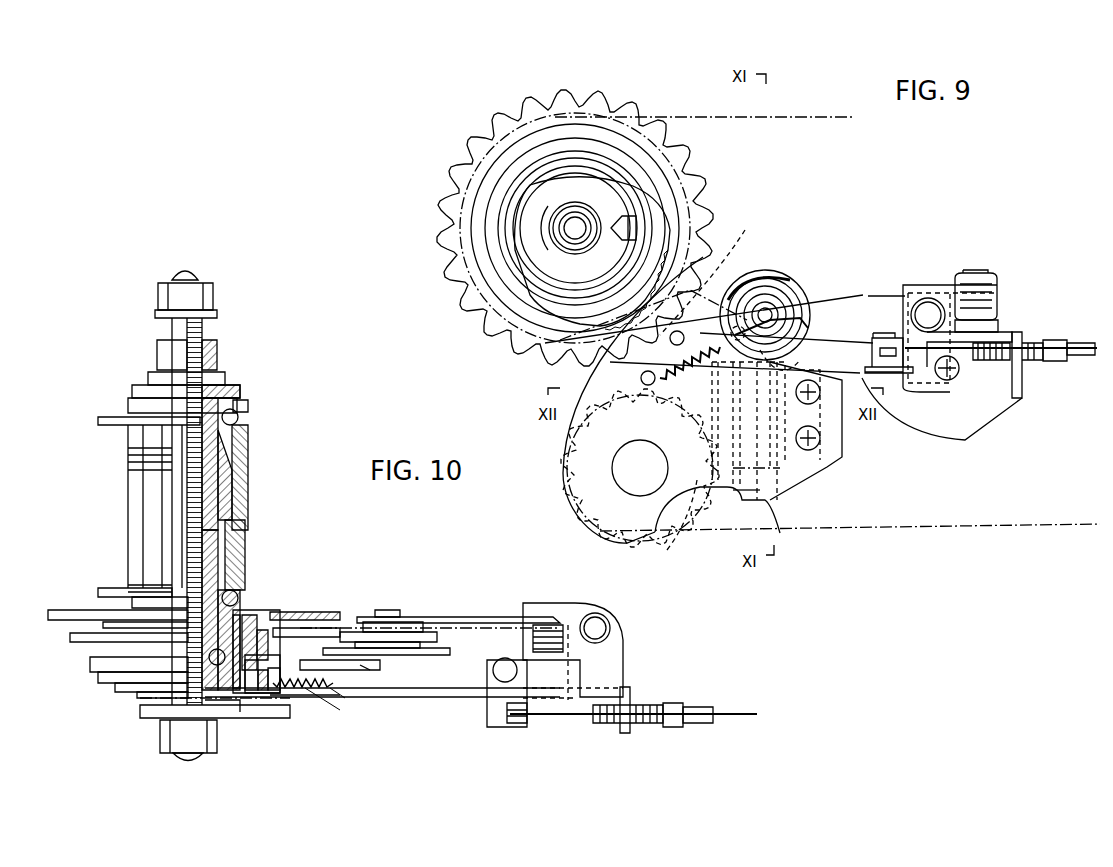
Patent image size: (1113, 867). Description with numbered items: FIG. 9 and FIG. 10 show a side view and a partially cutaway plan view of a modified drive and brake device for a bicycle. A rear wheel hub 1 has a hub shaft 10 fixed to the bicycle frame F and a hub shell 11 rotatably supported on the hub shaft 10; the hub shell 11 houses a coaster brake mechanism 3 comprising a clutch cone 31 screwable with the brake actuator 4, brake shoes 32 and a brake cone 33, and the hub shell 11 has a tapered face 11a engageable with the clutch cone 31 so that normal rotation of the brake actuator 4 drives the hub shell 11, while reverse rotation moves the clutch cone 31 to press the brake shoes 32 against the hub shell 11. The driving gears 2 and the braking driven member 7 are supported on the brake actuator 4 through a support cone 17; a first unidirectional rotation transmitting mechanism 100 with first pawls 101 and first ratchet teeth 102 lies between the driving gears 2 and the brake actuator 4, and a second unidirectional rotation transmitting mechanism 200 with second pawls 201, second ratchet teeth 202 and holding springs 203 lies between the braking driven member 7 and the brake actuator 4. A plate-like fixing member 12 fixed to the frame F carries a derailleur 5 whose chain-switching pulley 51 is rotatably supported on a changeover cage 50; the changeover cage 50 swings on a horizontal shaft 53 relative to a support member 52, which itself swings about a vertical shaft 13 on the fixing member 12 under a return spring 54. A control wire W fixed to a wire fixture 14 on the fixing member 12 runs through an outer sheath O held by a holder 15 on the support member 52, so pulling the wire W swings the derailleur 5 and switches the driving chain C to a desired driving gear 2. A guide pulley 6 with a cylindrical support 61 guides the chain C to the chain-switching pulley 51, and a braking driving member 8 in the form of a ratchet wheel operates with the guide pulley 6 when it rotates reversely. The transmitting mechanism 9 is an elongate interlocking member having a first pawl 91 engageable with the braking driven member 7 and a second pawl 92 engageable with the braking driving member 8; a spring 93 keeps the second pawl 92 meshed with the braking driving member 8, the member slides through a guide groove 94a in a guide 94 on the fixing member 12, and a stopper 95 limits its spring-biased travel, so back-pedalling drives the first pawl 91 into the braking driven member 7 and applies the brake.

In FIG. 9, the driving gears 2 is at (670, 188).
In FIG. 10, the driving gears 2 is at (298, 615).
In FIG. 9, the braking driven member 7 is at (680, 200).
In FIG. 10, the braking driven member 7 is at (290, 685).
In FIG. 9, the hub shaft 10 is at (582, 238).
In FIG. 10, the hub shaft 10 is at (223, 355).
In FIG. 9, the first pawl 91 is at (725, 258).
In FIG. 9, the chain-switching pulley 51 is at (758, 290).
In FIG. 10, the chain-switching pulley 51 is at (375, 610).
In FIG. 9, the derailleur 5 is at (805, 278).
In FIG. 10, the derailleur 5 is at (410, 617).
In FIG. 9, the changeover cage 50 is at (848, 296).
In FIG. 10, the changeover cage 50 is at (445, 617).
In FIG. 9, the wire fixture 14 is at (885, 333).
In FIG. 10, the wire fixture 14 is at (500, 727).
In FIG. 9, the horizontal shaft 53 is at (926, 298).
In FIG. 10, the horizontal shaft 53 is at (548, 625).
In FIG. 9, the support member 52 is at (947, 285).
In FIG. 10, the support member 52 is at (610, 648).
In FIG. 9, the vertical shaft 13 is at (973, 273).
In FIG. 10, the vertical shaft 13 is at (605, 618).
In FIG. 9, the return spring 54 is at (998, 322).
In FIG. 10, the return spring 54 is at (568, 625).
In FIG. 9, the control wire W is at (1090, 345).
In FIG. 10, the control wire W is at (545, 714).
In FIG. 9, the holder 15 is at (1053, 361).
In FIG. 10, the holder 15 is at (672, 727).
In FIG. 9, the outer sheath O is at (1075, 355).
In FIG. 10, the outer sheath O is at (700, 723).
In FIG. 9, the stopper 95 is at (668, 340).
In FIG. 9, the spring 93 is at (640, 380).
In FIG. 10, the spring 93 is at (330, 695).
In FIG. 9, the cylindrical support 61 is at (630, 470).
In FIG. 10, the cylindrical support 61 is at (300, 690).
In FIG. 9, the fixing member 12 is at (865, 447).
In FIG. 10, the fixing member 12 is at (415, 697).
In FIG. 9, the guide groove 94a is at (795, 465).
In FIG. 9, the guide 94 is at (808, 460).
In FIG. 9, the guide pulley 6 is at (668, 540).
In FIG. 10, the guide pulley 6 is at (320, 630).
In FIG. 9, the braking driving member 8 is at (705, 535).
In FIG. 10, the braking driving member 8 is at (320, 700).
In FIG. 9, the second pawl 92 is at (720, 507).
In FIG. 9, the transmitting mechanism 9 is at (752, 513).
In FIG. 10, the transmitting mechanism 9 is at (360, 668).
In FIG. 9, the driving chain C is at (862, 527).
In FIG. 10, the driving chain C is at (475, 628).
In FIG. 10, the brake cone 33 is at (248, 440).
In FIG. 10, the brake shoes 32 is at (244, 462).
In FIG. 10, the coaster brake mechanism 3 is at (248, 470).
In FIG. 10, the rear wheel hub 1 is at (250, 485).
In FIG. 10, the clutch cone 31 is at (240, 508).
In FIG. 10, the tapered face 11a is at (246, 525).
In FIG. 10, the hub shell 11 is at (242, 548).
In FIG. 10, the brake actuator 4 is at (235, 573).
In FIG. 10, the first pawls 101 is at (262, 615).
In FIG. 10, the first ratchet teeth 102 is at (270, 620).
In FIG. 10, the first unidirectional rotation transmitting mechanism 100 is at (336, 558).
In FIG. 10, the bicycle frame F is at (230, 718).
In FIG. 10, the support cone 17 is at (245, 705).
In FIG. 10, the holding springs 203 is at (252, 690).
In FIG. 10, the second ratchet teeth 202 is at (263, 690).
In FIG. 10, the second pawls 201 is at (274, 690).
In FIG. 10, the second unidirectional rotation transmitting mechanism 200 is at (322, 760).